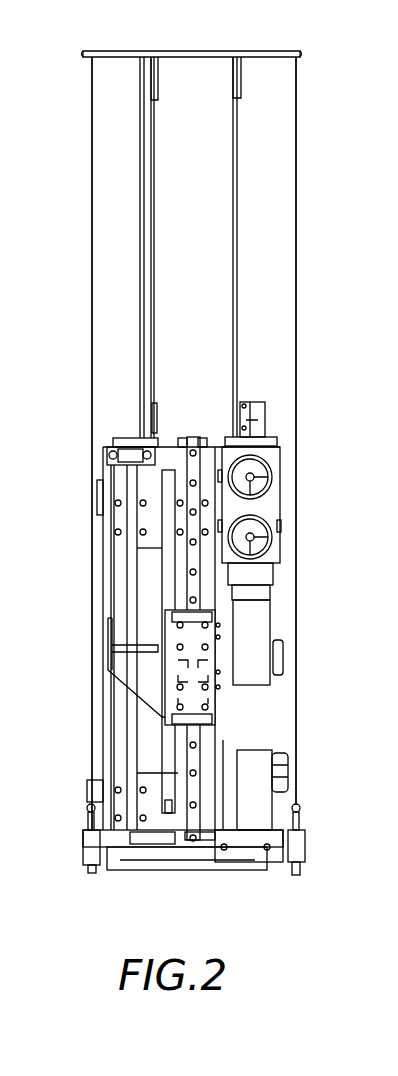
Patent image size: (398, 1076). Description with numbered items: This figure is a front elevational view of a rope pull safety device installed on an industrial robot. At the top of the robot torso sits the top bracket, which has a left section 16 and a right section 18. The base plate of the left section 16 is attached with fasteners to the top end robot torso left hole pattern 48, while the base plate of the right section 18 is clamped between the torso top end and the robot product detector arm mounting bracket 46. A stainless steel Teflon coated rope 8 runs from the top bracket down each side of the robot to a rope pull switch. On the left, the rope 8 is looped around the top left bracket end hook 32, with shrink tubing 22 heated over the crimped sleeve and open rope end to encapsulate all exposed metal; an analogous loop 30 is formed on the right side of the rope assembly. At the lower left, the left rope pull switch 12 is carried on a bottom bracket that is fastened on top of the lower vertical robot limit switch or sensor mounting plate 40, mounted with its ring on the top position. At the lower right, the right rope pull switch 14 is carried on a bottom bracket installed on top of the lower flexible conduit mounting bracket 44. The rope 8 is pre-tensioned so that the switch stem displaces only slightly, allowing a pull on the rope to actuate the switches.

The rope 8 is at (92, 192).
The left rope pull switch 12 is at (97, 870).
The right rope pull switch 14 is at (316, 846).
The left section of the top bracket 16 is at (140, 358).
The right section of the top bracket 18 is at (238, 355).
The shrink tubing 22 is at (298, 800).
The loop 30 is at (300, 62).
The top left bracket end hook 32 is at (85, 50).
The sensor mounting plate 40 is at (88, 780).
The flexible conduit mounting bracket 44 is at (265, 868).
The product detector arm mounting bracket 46 is at (280, 448).
The top end robot torso left hole pattern 48 is at (107, 450).